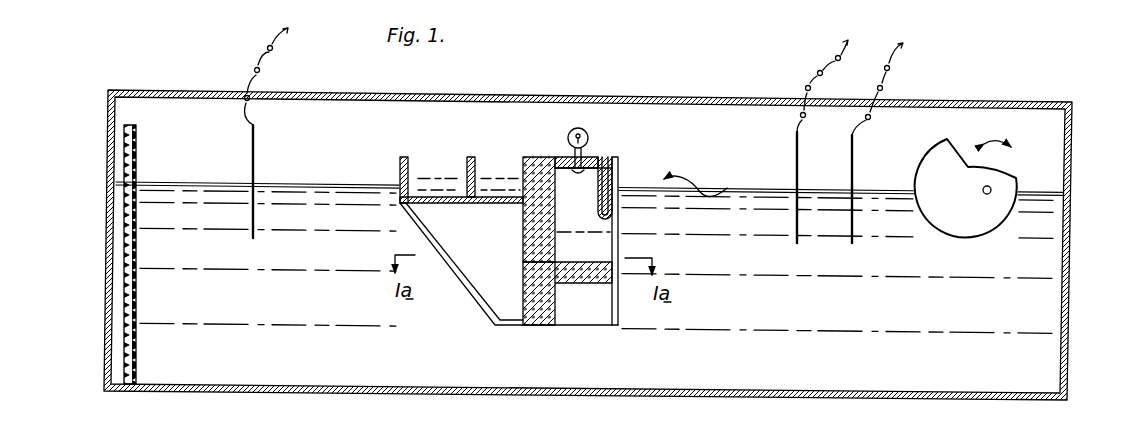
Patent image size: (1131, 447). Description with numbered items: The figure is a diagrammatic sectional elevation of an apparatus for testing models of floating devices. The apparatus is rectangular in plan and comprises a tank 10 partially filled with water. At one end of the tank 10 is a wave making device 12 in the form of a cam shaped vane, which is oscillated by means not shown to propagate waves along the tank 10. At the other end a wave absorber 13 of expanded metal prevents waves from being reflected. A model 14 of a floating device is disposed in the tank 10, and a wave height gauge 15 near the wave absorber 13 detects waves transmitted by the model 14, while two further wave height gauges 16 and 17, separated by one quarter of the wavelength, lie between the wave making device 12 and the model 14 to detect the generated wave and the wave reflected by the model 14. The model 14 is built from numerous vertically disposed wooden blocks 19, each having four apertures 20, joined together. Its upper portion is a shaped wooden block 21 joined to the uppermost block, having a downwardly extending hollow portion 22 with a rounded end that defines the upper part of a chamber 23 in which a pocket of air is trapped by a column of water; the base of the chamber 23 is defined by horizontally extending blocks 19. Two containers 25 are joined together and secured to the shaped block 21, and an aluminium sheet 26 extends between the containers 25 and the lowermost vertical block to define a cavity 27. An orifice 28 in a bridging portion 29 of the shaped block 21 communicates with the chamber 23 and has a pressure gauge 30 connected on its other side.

The tank 10 is at (1069, 258).
The wave making device 12 is at (1010, 185).
The wave absorber 13 is at (134, 357).
The model 14 is at (461, 254).
The wave height gauge 15 is at (270, 133).
The wave height gauge 16 is at (853, 182).
The wave height gauge 17 is at (795, 157).
The wooden blocks 19 is at (522, 314).
The apertures 20 is at (546, 313).
The shaped wooden block 21 is at (537, 157).
The hollow portion 22 is at (616, 182).
The chamber 23 is at (590, 234).
The containers 25 is at (471, 157).
The aluminium sheet 26 is at (480, 309).
The cavity 27 is at (497, 258).
The orifice 28 is at (603, 160).
The bridging portion 29 is at (562, 159).
The pressure gauge 30 is at (588, 133).